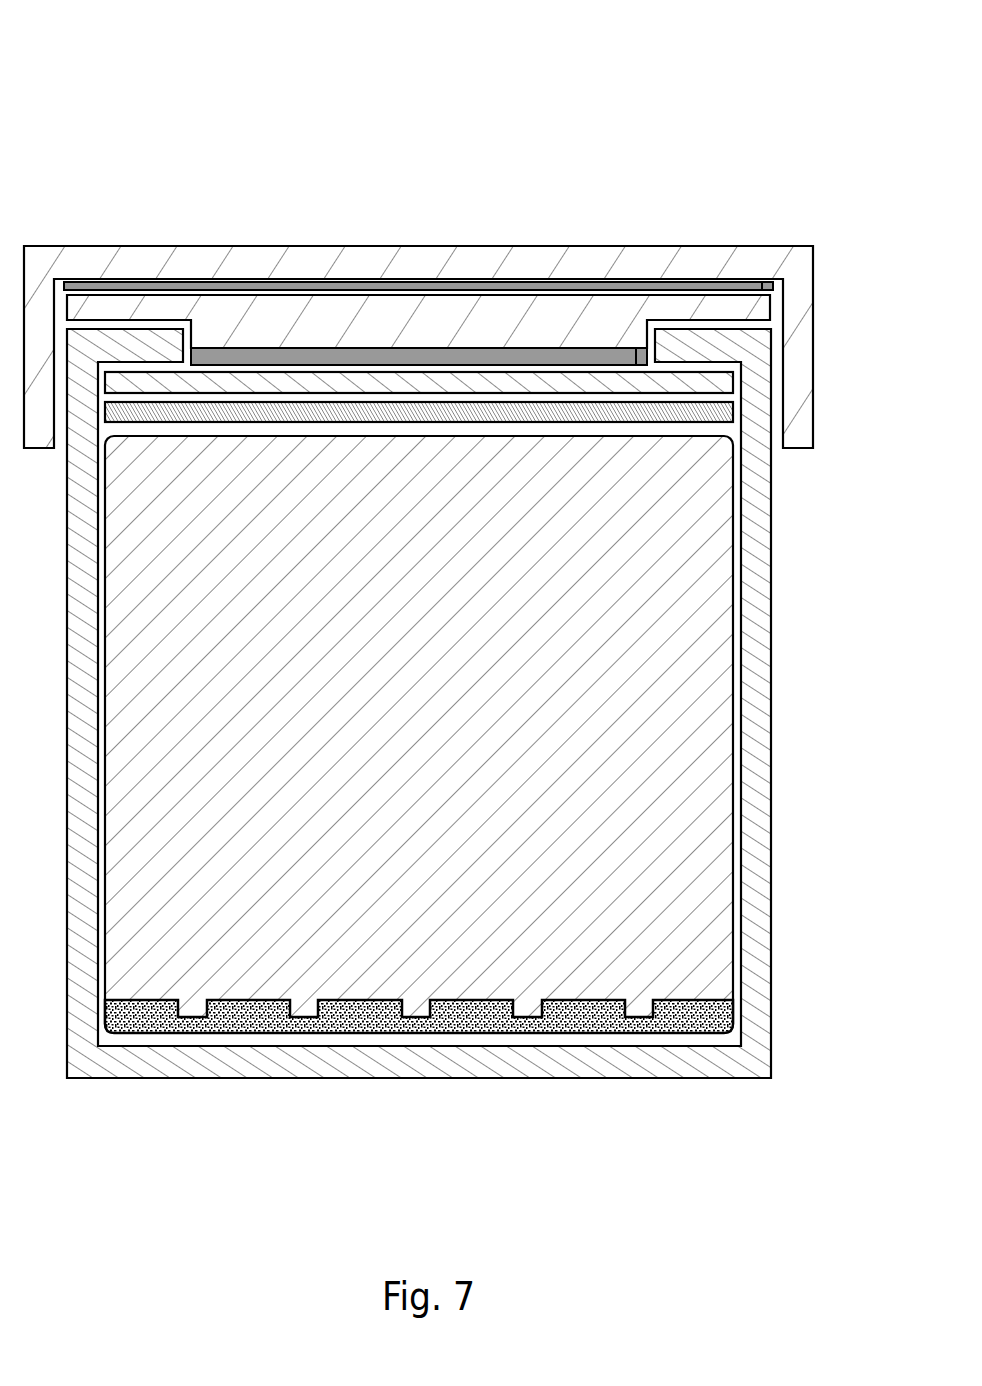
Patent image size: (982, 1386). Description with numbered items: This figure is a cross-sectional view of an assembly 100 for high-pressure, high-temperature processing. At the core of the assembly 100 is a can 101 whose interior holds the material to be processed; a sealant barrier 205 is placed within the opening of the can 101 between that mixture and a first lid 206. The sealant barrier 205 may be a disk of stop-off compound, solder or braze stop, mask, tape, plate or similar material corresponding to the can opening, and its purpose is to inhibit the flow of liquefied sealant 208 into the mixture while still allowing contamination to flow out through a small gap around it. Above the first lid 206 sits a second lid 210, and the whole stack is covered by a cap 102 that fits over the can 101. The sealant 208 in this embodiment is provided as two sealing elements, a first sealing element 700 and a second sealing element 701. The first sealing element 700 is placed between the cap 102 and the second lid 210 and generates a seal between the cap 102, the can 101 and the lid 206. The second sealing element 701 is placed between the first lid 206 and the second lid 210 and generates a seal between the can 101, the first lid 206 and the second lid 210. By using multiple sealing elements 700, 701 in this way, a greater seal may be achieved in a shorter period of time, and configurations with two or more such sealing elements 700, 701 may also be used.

The assembly 100 is at (110, 106).
The can 101 is at (784, 633).
The cap 102 is at (655, 265).
The sealant barrier 205 is at (378, 415).
The first lid 206 is at (492, 382).
The sealant 208 is at (660, 358).
The second lid 210 is at (535, 318).
The first sealing element 700 is at (718, 285).
The second sealing element 701 is at (228, 357).